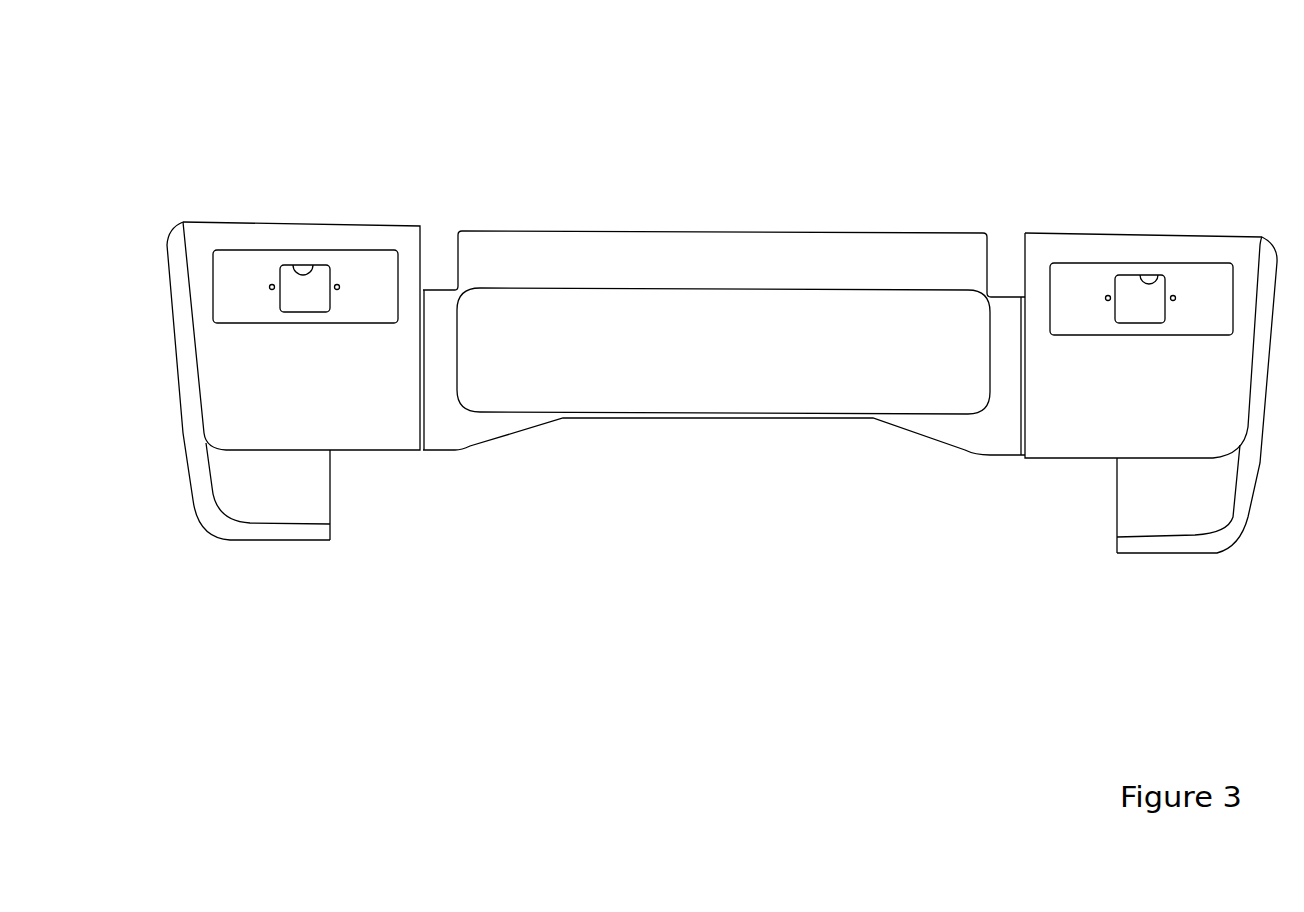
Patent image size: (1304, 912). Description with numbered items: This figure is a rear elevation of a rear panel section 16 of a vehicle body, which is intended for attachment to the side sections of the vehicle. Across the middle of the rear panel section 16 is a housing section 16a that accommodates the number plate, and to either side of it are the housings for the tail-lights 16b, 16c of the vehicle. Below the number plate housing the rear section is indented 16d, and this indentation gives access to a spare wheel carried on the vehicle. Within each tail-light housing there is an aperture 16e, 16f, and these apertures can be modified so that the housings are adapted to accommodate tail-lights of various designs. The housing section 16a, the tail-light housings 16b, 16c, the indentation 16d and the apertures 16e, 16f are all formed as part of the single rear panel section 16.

The rear panel section 16 is at (722, 311).
The housing section 16a is at (863, 397).
The tail-light housing 16b is at (367, 270).
The tail-light housing 16c is at (1078, 278).
The indentation 16d is at (718, 422).
The aperture 16e is at (1157, 278).
The aperture 16f is at (290, 265).